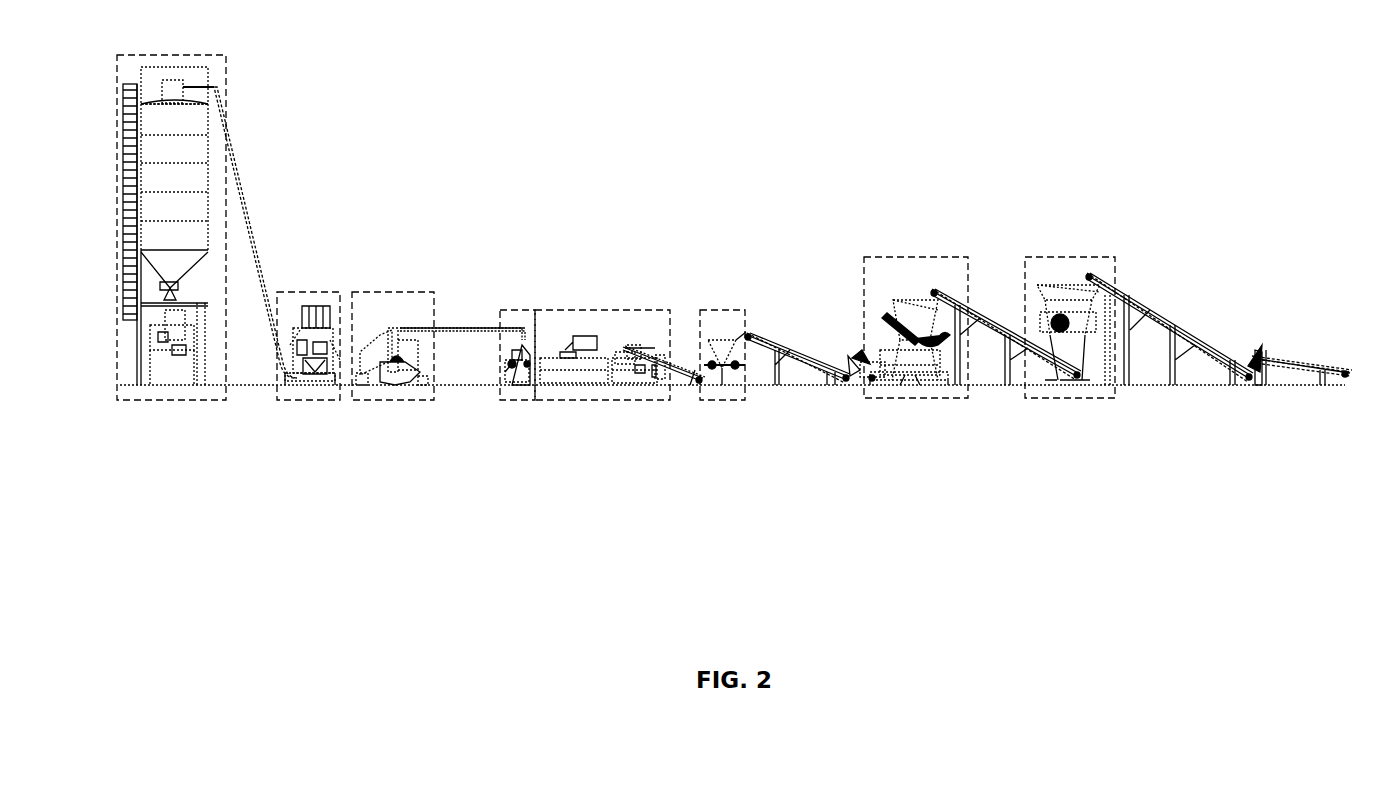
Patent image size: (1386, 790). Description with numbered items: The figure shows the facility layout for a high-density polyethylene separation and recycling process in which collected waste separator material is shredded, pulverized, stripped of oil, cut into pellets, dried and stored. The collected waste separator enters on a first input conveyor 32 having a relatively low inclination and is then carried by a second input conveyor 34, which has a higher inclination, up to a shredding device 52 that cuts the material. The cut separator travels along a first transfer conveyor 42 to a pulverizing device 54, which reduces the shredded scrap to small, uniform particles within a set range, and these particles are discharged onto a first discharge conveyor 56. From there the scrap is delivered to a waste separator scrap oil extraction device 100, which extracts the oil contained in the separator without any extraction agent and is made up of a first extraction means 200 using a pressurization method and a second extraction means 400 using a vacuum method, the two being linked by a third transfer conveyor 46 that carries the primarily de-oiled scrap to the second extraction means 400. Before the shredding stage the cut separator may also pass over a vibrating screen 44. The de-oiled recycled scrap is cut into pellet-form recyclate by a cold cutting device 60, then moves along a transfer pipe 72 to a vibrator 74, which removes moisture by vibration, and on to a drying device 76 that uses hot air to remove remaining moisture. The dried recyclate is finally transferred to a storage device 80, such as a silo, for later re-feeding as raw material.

The storage device 80 is at (167, 410).
The drying device 76 is at (305, 410).
The vibrator 74 is at (390, 410).
The transfer pipe 72 is at (466, 328).
The cold cutting device 60 is at (514, 410).
The second extraction means 400 is at (600, 410).
The first extraction means 200 is at (718, 410).
The waste separator scrap oil extraction device 100 is at (612, 490).
The third transfer conveyor 46 is at (686, 348).
The first discharge conveyor 56 is at (798, 348).
The pulverizing device 54 is at (913, 408).
The vibrating screen 44 is at (890, 382).
The first transfer conveyor 42 is at (1003, 300).
The shredding device 52 is at (1067, 408).
The second input conveyor 34 is at (1180, 325).
The first input conveyor 32 is at (1312, 362).